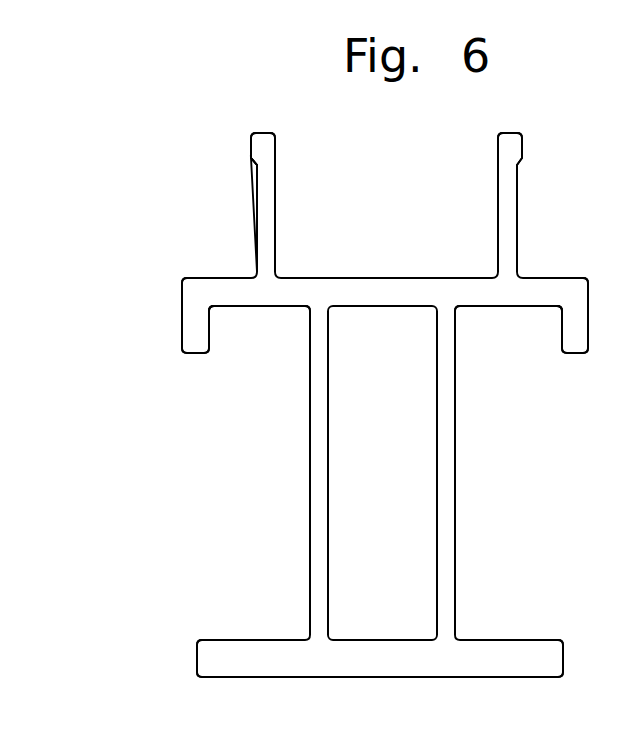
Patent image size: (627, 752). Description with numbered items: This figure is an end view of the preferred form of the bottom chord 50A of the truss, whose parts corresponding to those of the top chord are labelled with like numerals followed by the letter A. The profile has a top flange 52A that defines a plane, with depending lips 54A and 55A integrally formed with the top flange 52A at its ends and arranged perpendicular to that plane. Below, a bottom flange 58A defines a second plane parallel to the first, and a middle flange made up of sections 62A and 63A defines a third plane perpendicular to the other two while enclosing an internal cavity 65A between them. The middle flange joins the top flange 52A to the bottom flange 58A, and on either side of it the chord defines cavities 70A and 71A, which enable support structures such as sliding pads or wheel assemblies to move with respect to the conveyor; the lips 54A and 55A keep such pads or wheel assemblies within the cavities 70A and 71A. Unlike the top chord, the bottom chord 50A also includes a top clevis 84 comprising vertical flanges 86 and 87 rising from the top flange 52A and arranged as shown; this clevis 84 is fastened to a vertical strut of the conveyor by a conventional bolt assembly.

The bottom chord 50A is at (297, 278).
The top flange 52A is at (355, 278).
The depending lip 54A is at (562, 336).
The depending lip 55A is at (210, 337).
The bottom flange 58A is at (215, 639).
The middle flange section 62A is at (455, 570).
The middle flange section 63A is at (308, 573).
The internal cavity 65A is at (365, 502).
The cavity 70A is at (482, 365).
The cavity 71A is at (268, 368).
The top clevis 84 is at (255, 239).
The vertical flange 86 is at (522, 139).
The vertical flange 87 is at (252, 137).